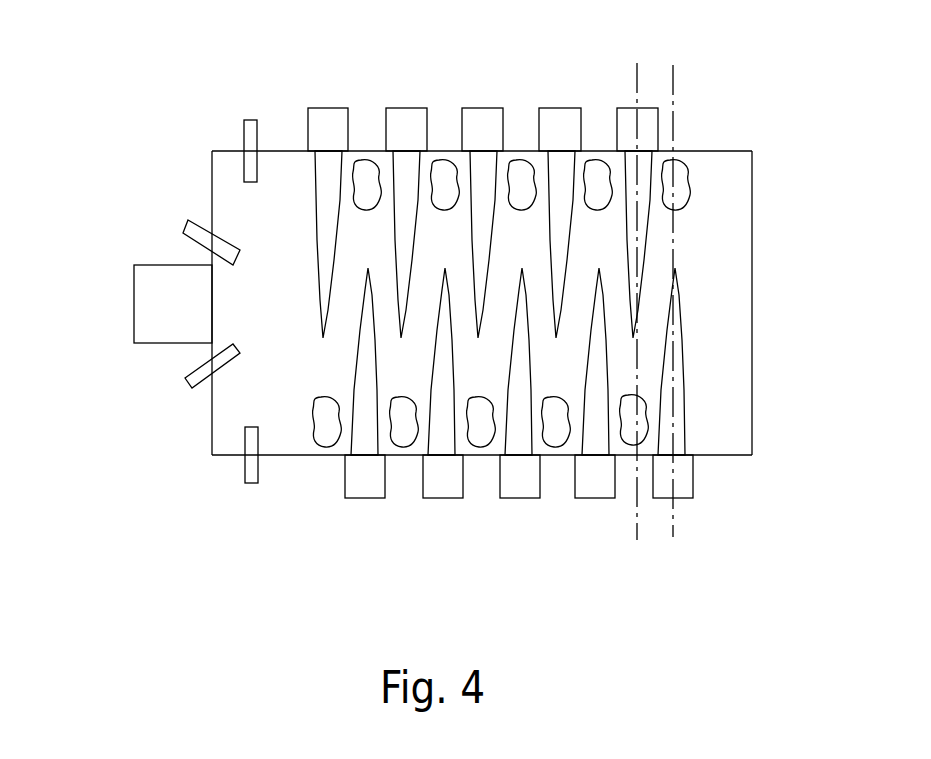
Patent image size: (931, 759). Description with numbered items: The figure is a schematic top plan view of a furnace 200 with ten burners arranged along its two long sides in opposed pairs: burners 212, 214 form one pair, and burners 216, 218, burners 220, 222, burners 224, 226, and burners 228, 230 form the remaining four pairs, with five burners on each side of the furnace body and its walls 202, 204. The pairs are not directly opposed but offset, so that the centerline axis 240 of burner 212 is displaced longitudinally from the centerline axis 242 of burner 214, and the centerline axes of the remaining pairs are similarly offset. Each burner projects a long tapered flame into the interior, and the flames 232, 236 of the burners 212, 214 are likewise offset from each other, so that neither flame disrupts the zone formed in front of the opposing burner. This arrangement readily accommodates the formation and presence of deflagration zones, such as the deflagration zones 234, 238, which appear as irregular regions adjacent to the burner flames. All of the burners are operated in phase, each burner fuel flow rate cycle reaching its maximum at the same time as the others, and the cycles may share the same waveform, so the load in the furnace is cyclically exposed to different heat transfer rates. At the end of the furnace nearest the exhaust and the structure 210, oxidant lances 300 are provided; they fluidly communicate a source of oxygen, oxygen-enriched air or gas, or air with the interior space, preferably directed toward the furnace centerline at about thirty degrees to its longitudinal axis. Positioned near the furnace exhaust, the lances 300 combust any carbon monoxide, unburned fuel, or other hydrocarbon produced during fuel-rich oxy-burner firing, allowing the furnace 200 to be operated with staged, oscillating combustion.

The furnace 200 is at (198, 109).
The lower wall 202 is at (223, 457).
The upper wall 204 is at (225, 173).
The connector block 210 is at (142, 282).
The burner 212 is at (744, 405).
The burner 214 is at (697, 204).
The burner 216 is at (577, 487).
The burner 218 is at (540, 119).
The burner 220 is at (502, 487).
The burner 222 is at (462, 119).
The burner 224 is at (425, 487).
The burner 226 is at (386, 119).
The burner 228 is at (347, 487).
The burner 230 is at (308, 119).
The flame 232 is at (672, 335).
The deflagration zone 234 is at (683, 182).
The flame 236 is at (638, 235).
The deflagration zone 238 is at (638, 415).
The centerline axis 240 is at (673, 533).
The centerline axis 242 is at (637, 73).
The oxidant lance 300 is at (244, 134).